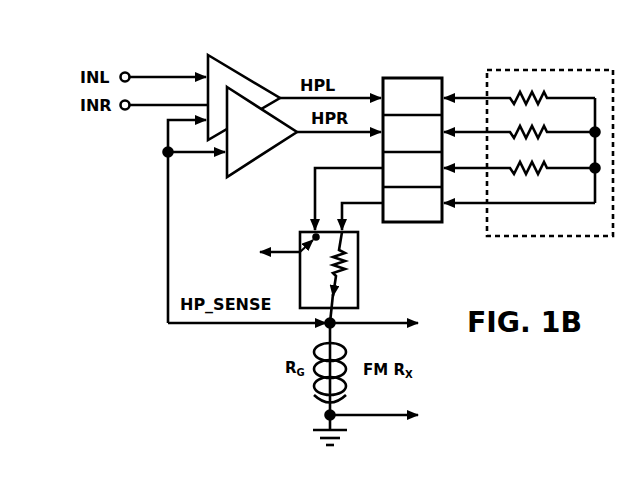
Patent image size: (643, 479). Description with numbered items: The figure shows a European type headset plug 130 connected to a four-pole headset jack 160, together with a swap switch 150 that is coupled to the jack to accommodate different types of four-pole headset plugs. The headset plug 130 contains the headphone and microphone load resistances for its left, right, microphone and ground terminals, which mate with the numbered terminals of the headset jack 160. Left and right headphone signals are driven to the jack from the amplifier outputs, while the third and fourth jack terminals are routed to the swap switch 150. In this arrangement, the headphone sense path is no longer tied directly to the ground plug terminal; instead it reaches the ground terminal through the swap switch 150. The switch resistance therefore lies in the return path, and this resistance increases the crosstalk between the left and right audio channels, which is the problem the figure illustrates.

The 4-pole headset jack 160 is at (440, 53).
The European type headset plug 130 is at (536, 125).
The swap switch 150 is at (346, 274).